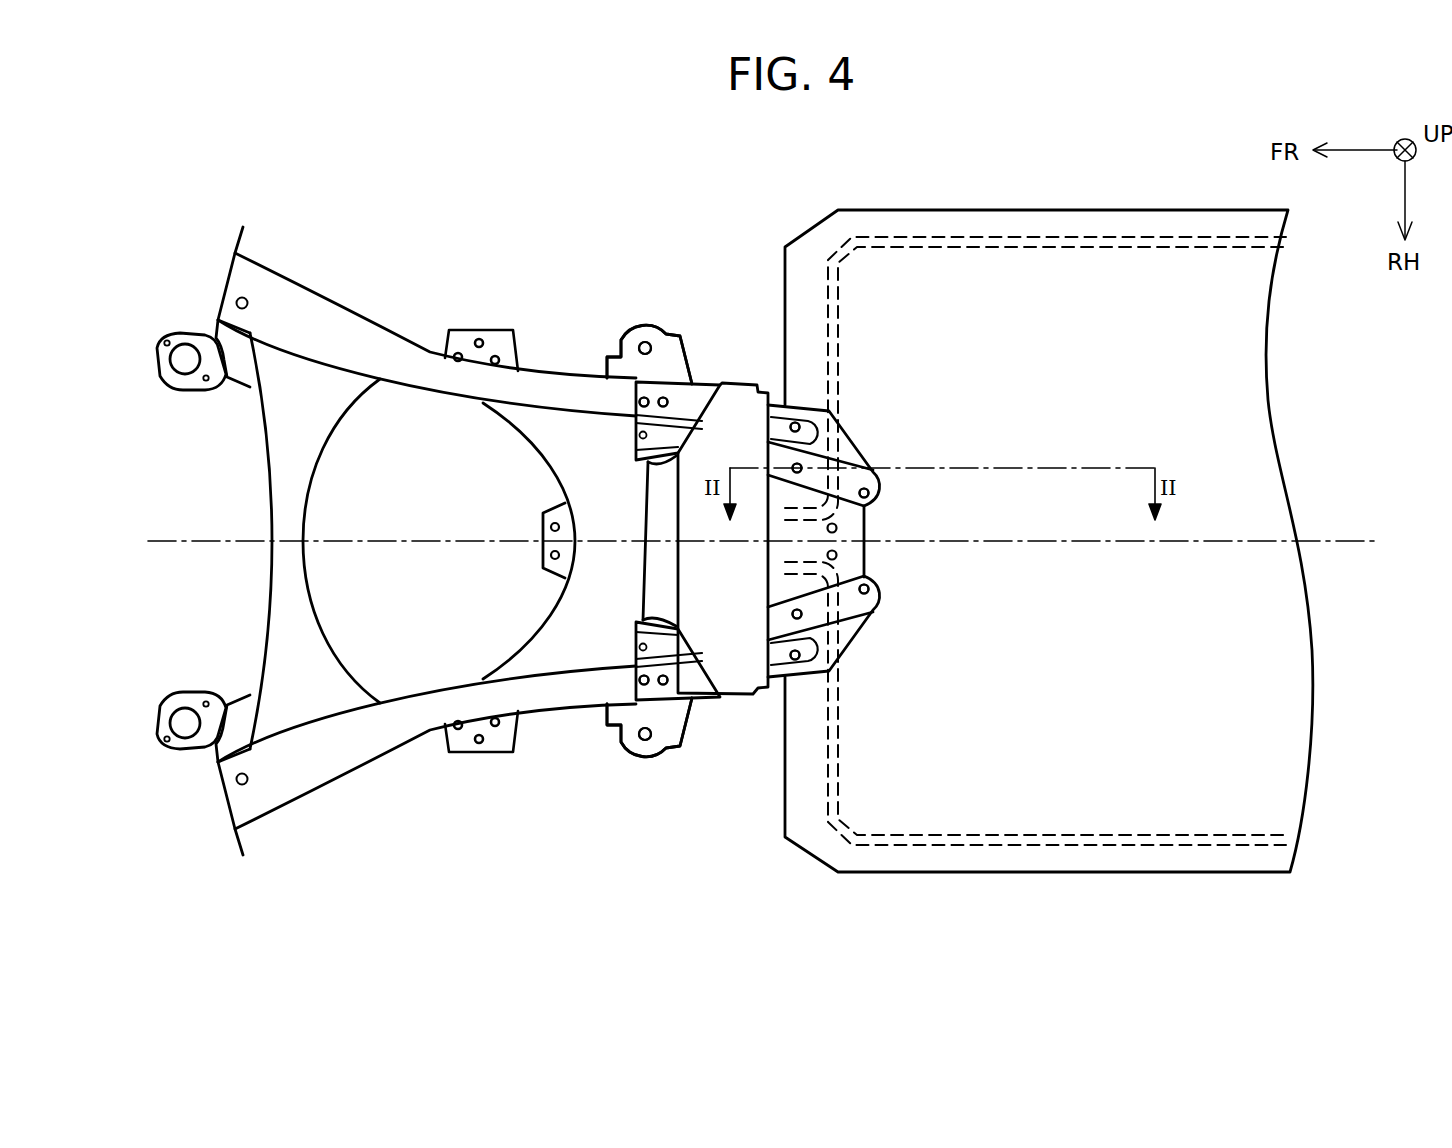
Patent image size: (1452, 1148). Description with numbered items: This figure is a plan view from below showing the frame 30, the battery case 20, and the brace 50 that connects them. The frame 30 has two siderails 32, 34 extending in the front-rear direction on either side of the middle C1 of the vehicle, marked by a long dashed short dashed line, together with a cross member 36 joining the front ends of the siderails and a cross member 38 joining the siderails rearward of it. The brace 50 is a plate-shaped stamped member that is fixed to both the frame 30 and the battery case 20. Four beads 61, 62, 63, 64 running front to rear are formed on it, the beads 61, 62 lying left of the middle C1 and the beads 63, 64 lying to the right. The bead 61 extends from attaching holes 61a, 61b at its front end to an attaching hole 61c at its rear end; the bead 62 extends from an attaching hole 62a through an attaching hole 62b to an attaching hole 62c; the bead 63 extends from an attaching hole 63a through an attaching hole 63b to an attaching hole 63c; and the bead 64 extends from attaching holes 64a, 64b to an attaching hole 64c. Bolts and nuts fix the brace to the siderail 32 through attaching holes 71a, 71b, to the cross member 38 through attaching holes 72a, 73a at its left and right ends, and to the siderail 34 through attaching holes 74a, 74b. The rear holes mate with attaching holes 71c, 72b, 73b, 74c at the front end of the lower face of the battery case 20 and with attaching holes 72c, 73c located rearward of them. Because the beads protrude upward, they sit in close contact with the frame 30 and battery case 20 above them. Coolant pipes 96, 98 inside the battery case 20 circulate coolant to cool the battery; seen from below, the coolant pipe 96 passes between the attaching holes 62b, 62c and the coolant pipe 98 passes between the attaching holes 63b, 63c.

The battery case 20 is at (1262, 598).
The frame 30 is at (247, 584).
The siderail 32 is at (398, 372).
The siderail 34 is at (400, 710).
The cross member 36 is at (283, 475).
The cross member 38 is at (570, 630).
The brace 50 is at (730, 714).
The bead 61 is at (697, 405).
The attaching hole 61a is at (644, 402).
The attaching hole 61b is at (645, 348).
The attaching hole 61c is at (795, 427).
The bead 62 is at (778, 460).
The attaching hole 62a is at (692, 380).
The attaching hole 62b is at (797, 468).
The attaching hole 62c is at (877, 480).
The bead 63 is at (778, 622).
The attaching hole 63a is at (692, 702).
The attaching hole 63b is at (797, 614).
The attaching hole 63c is at (877, 597).
The bead 64 is at (697, 677).
The attaching hole 64a is at (644, 680).
The attaching hole 64b is at (645, 734).
The attaching hole 64c is at (795, 655).
The attaching hole 71a is at (644, 402).
The attaching hole 71b is at (645, 348).
The attaching hole 71c is at (795, 427).
The attaching hole 72a is at (692, 380).
The attaching hole 72b is at (797, 468).
The attaching hole 72c is at (877, 480).
The attaching hole 73a is at (692, 702).
The attaching hole 73b is at (797, 614).
The attaching hole 73c is at (877, 597).
The attaching hole 74a is at (644, 680).
The attaching hole 74b is at (645, 734).
The attaching hole 74c is at (795, 655).
The coolant pipe 96 is at (1028, 243).
The coolant pipe 98 is at (1025, 843).
The middle of the electrified vehicle C1 is at (1372, 541).